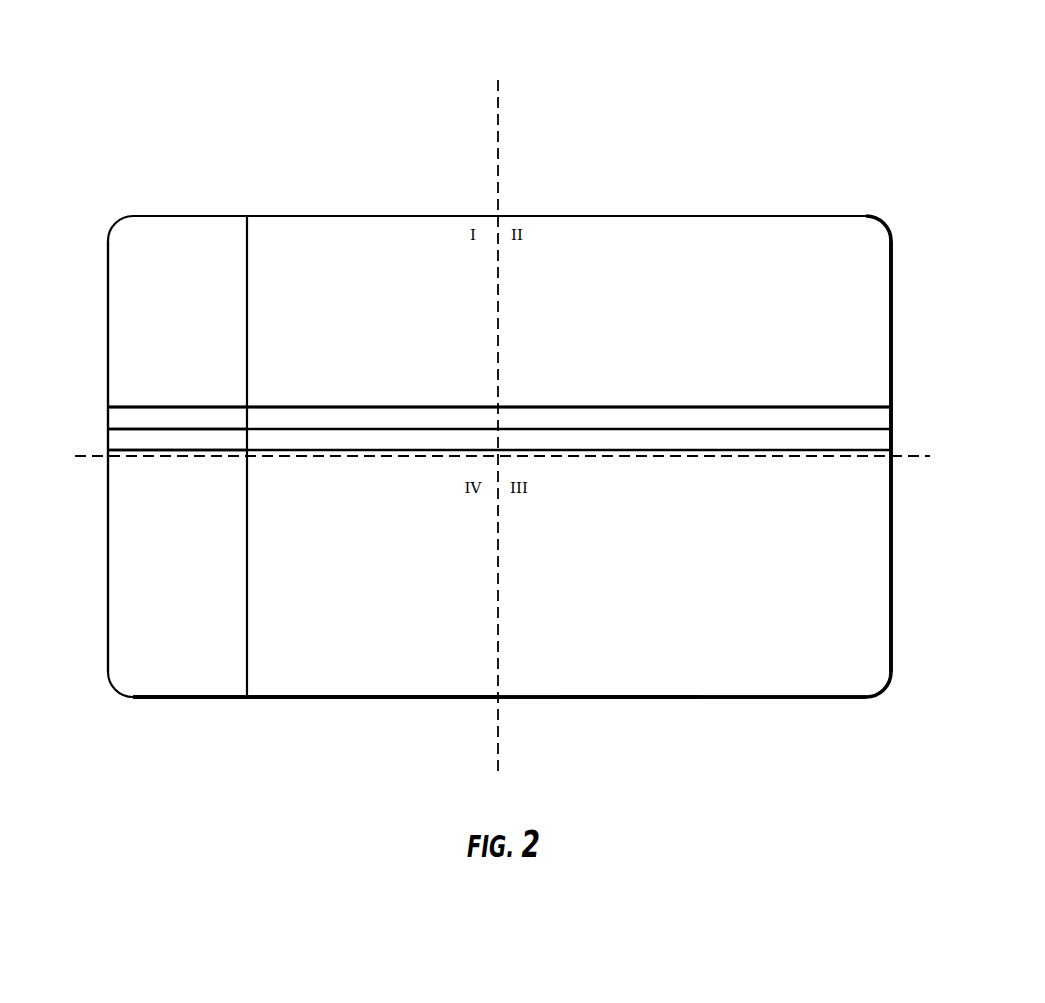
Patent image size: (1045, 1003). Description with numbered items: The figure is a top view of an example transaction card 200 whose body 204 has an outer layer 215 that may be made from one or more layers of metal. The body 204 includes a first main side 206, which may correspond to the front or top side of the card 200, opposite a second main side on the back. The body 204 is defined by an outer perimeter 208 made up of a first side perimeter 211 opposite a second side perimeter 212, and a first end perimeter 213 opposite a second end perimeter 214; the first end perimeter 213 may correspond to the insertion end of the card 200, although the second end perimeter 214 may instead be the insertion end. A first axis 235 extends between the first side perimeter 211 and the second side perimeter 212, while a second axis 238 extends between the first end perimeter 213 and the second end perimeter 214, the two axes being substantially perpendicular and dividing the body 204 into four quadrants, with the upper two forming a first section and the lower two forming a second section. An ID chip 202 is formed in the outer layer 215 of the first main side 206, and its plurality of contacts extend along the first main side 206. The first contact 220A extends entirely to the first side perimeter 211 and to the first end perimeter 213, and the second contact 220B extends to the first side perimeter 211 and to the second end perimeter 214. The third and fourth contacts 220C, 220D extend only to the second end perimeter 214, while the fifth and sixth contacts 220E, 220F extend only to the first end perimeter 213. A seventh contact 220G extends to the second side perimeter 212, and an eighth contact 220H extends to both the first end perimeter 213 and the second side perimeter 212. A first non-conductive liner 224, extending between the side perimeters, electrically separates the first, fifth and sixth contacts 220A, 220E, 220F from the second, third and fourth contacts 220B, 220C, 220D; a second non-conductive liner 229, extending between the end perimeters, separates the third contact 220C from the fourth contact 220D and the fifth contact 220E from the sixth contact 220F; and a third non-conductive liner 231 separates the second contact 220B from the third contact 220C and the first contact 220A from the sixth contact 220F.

The transaction card 200 is at (668, 96).
The ID chip 202 is at (134, 380).
The body 204 is at (814, 208).
The first main side 206 is at (711, 237).
The outer perimeter 208 is at (356, 710).
The first side perimeter 211 is at (438, 216).
The second side perimeter 212 is at (625, 699).
The first end perimeter 213 is at (107, 563).
The second end perimeter 214 is at (893, 265).
The outer layer 215 is at (729, 301).
The first contact 220A is at (160, 240).
The second contact 220B is at (359, 240).
The third contact 220C is at (348, 415).
The fourth contact 220D is at (346, 442).
The fifth contact 220E is at (186, 442).
The sixth contact 220F is at (122, 418).
The seventh contact 220G is at (450, 672).
The eighth contact 220H is at (194, 682).
The first non-conductive liner 224 is at (250, 232).
The second non-conductive liner 229 is at (816, 429).
The third non-conductive liner 231 is at (750, 407).
The first axis 235 is at (500, 162).
The second axis 238 is at (906, 460).